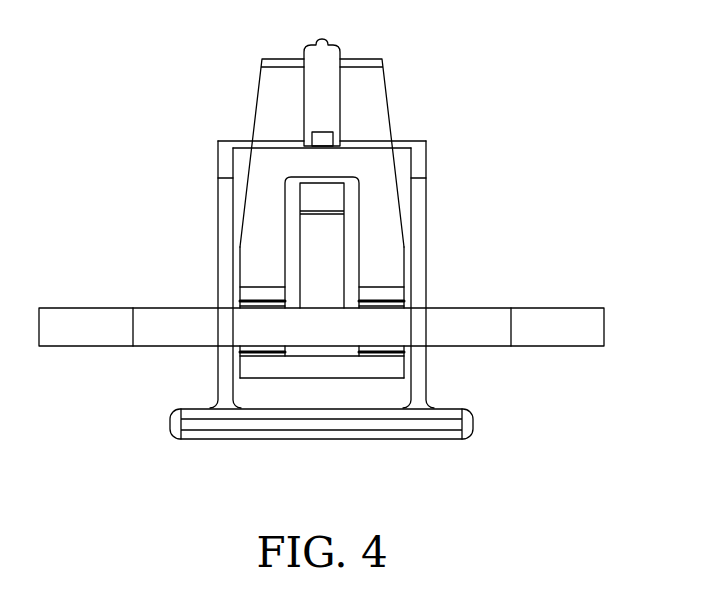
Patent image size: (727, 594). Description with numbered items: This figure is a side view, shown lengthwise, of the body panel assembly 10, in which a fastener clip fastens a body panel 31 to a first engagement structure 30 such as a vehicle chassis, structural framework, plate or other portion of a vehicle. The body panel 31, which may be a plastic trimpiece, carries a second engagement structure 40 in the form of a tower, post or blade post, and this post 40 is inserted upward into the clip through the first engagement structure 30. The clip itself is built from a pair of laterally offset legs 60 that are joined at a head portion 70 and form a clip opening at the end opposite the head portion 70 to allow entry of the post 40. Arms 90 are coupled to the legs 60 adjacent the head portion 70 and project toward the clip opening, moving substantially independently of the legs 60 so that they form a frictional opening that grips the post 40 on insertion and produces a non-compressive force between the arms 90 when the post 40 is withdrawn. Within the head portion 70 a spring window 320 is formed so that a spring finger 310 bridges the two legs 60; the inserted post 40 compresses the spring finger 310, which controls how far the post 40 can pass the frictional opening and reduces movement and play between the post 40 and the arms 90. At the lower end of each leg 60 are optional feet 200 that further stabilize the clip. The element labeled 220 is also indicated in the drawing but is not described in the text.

The body panel assembly 10 is at (572, 93).
The first engagement structure 30 is at (565, 320).
The body panel 31 is at (433, 425).
The second engagement structure 40 is at (415, 193).
The legs 60 is at (255, 250).
The head portion 70 is at (412, 90).
The arms 90 is at (315, 287).
The feet 200 is at (393, 365).
The fastening unit 220 is at (182, 160).
The spring finger 310 is at (320, 135).
The spring window 320 is at (322, 43).